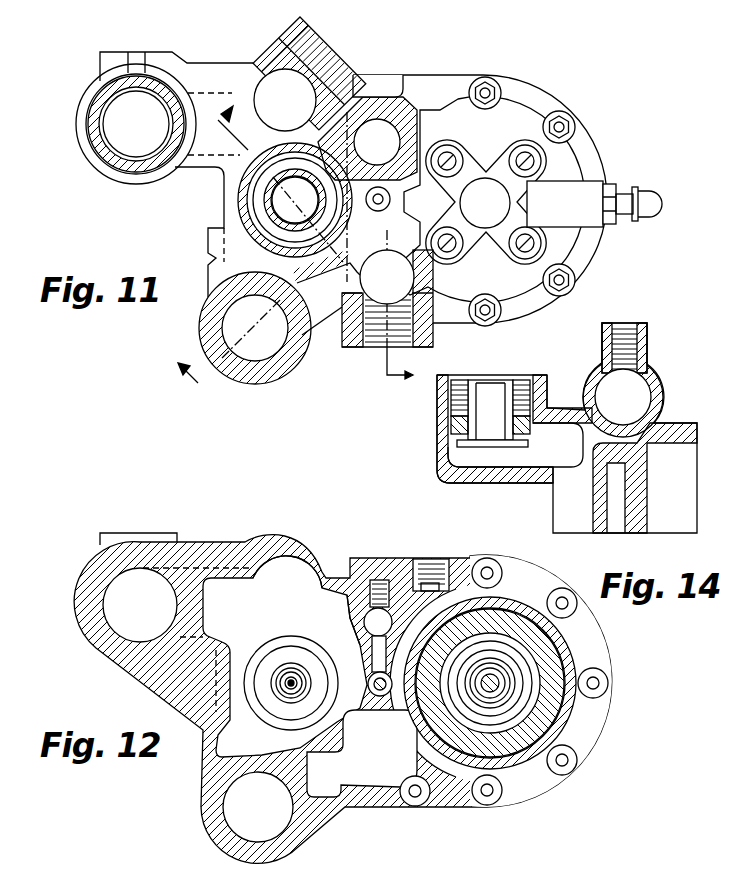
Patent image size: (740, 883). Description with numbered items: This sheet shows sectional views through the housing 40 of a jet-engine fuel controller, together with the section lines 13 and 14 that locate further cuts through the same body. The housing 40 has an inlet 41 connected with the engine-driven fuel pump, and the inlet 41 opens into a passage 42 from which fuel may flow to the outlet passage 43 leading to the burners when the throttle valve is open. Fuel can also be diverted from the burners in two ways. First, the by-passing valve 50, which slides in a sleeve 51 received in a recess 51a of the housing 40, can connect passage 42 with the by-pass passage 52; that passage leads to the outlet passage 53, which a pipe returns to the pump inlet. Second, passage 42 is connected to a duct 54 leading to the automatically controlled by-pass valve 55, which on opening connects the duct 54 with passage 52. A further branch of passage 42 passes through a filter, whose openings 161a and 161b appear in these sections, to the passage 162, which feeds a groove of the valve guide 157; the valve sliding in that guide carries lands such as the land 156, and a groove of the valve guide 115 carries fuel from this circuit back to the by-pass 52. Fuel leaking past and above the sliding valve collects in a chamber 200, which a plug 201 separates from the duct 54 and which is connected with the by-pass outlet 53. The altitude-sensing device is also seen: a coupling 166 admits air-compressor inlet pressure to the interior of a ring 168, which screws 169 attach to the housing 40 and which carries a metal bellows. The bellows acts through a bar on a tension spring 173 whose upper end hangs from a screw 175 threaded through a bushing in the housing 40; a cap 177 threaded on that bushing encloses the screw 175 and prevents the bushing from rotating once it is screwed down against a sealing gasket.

In FIG. 11, the section line 13- 13 is at (316, 245).
In FIG. 11, the section line 14- 14 is at (325, 321).
In FIG. 11, the housing 40 is at (600, 180).
In FIG. 11, the inlet 41 is at (330, 60).
In FIG. 11, the passage 42 is at (247, 63).
In FIG. 14, the passage 42 is at (452, 395).
In FIG. 11, the outlet passage 43 is at (132, 153).
In FIG. 12, the outlet passage 43 is at (113, 603).
In FIG. 14, the by-passing valve 50 is at (491, 441).
In FIG. 14, the sleeve 51 is at (456, 413).
In FIG. 11, the recess 51a is at (262, 348).
In FIG. 14, the recess 51a is at (486, 441).
In FIG. 12, the recess 51a is at (292, 822).
In FIG. 11, the by-pass passage 52 is at (326, 292).
In FIG. 14, the by-pass passage 52 is at (537, 465).
In FIG. 11, the outlet passage 53 is at (387, 318).
In FIG. 14, the outlet passage 53 is at (643, 403).
In FIG. 12, the duct 54 is at (285, 566).
In FIG. 12, the by-pass valve 55 is at (293, 668).
In FIG. 12, the valve guide 115 is at (263, 652).
In FIG. 11, the land 156 is at (392, 197).
In FIG. 12, the land 156 is at (350, 660).
In FIG. 11, the valve guide 157 is at (392, 203).
In FIG. 12, the valve guide 157 is at (378, 698).
In FIG. 11, the passage 161a is at (398, 142).
In FIG. 12, the passage 161b is at (358, 620).
In FIG. 12, the passage 162 is at (392, 623).
In FIG. 11, the coupling 166 is at (690, 184).
In FIG. 12, the ring 168 is at (543, 673).
In FIG. 11, the screws 169 is at (495, 147).
In FIG. 12, the tension spring 173 is at (480, 693).
In FIG. 12, the screw 175 is at (500, 673).
In FIG. 11, the cap 177 is at (497, 203).
In FIG. 11, the chamber 200 is at (257, 193).
In FIG. 11, the plug 201 is at (267, 207).